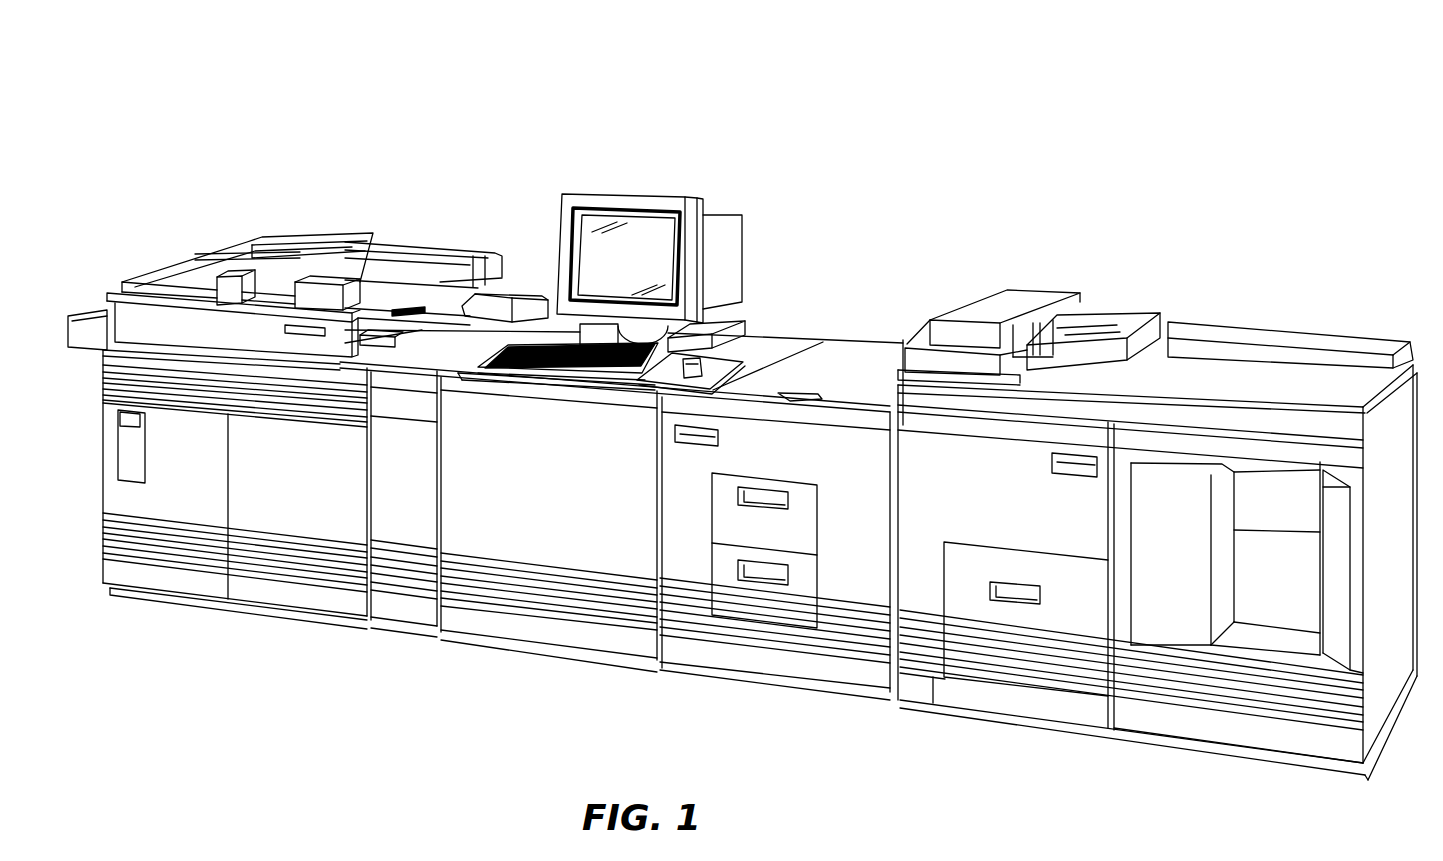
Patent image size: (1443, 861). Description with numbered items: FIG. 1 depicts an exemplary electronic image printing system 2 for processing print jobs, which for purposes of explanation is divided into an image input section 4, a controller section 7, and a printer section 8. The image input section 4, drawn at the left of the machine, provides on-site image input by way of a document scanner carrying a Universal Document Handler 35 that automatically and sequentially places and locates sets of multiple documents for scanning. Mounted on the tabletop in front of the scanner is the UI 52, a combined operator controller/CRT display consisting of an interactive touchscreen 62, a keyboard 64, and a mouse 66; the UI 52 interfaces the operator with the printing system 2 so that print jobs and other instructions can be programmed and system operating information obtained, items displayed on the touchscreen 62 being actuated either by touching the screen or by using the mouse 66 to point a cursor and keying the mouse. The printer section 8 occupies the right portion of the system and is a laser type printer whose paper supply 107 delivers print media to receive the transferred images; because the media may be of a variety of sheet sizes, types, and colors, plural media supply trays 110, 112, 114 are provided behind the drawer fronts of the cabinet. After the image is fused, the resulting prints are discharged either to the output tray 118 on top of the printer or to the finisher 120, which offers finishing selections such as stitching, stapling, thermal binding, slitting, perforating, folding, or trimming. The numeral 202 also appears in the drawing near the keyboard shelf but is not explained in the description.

The image printing system 2 is at (888, 78).
The image input section 4 is at (356, 218).
The controller section 7 is at (88, 492).
The printer section 8 is at (856, 246).
The Universal Document Handler 35 is at (222, 268).
The UI 52 is at (656, 172).
The interactive touchscreen 62 is at (592, 265).
The keyboard 64 is at (547, 382).
The mouse 66 is at (651, 393).
The paper supply 107 is at (828, 556).
The media supply tray 110 is at (972, 543).
The media supply tray 112 is at (778, 483).
The media supply tray 114 is at (712, 549).
The output tray 118 is at (1100, 300).
The finisher 120 is at (1203, 728).
The keyboard shelf 202 is at (492, 381).